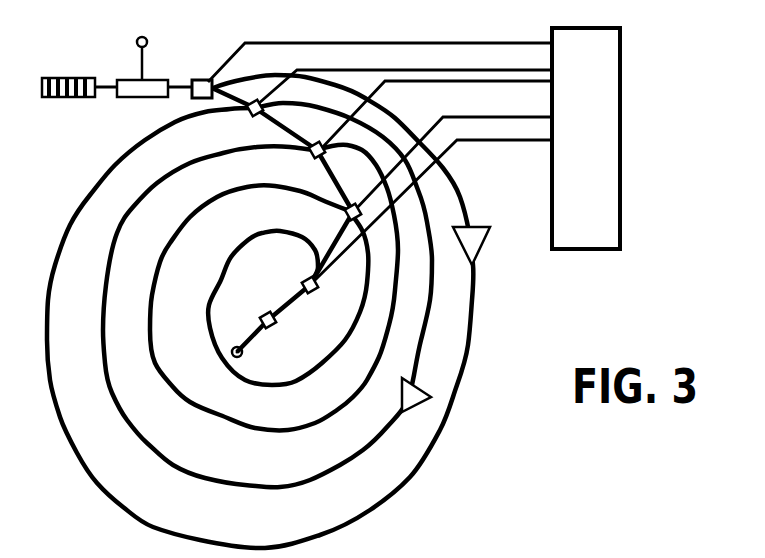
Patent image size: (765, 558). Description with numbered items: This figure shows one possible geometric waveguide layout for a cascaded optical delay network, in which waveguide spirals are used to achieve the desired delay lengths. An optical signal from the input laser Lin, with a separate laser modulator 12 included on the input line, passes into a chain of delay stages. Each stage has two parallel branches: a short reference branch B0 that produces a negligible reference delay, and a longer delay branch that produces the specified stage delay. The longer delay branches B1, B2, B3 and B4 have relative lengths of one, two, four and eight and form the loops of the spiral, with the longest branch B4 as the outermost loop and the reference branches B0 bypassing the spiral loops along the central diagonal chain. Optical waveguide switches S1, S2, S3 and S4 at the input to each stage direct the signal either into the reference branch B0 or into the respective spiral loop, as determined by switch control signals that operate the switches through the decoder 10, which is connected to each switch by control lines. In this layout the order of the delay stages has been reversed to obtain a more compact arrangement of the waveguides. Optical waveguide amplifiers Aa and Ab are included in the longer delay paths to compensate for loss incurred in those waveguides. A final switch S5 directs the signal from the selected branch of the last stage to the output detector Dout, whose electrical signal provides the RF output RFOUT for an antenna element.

The decoder 10 is at (613, 186).
The laser modulator 12 is at (130, 82).
The input laser Lin is at (75, 78).
The optical waveguide switch S1 is at (345, 214).
The optical waveguide switch S2 is at (314, 157).
The optical waveguide switch S3 is at (260, 116).
The optical waveguide switch S4 is at (188, 101).
The final switch S5 is at (308, 278).
The reference branch B0 is at (223, 103).
The delay branch B1 is at (258, 386).
The delay branch B2 is at (243, 434).
The delay branch B3 is at (188, 468).
The delay branch B4 is at (142, 528).
The output detector Dout is at (262, 318).
The RF output RFOUT is at (246, 352).
The optical waveguide amplifier Aa is at (428, 400).
The optical waveguide amplifier Ab is at (481, 228).